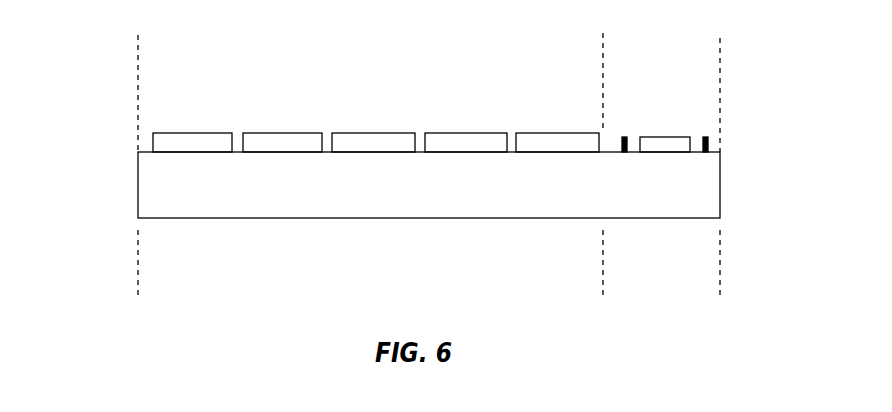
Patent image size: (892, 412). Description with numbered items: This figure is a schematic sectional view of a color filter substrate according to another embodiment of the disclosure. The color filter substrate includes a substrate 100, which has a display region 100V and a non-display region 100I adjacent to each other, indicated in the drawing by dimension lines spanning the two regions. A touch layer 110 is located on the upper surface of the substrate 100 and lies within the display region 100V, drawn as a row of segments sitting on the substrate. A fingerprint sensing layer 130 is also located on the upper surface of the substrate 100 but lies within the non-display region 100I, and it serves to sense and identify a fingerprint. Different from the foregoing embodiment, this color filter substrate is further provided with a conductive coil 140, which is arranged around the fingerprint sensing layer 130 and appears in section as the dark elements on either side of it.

The substrate 100 is at (167, 202).
The touch layer 110 is at (167, 144).
The fingerprint sensing layer 130 is at (673, 143).
The conductive coil 140 is at (712, 143).
The display region 100V is at (603, 73).
The non-display region 100I is at (720, 73).